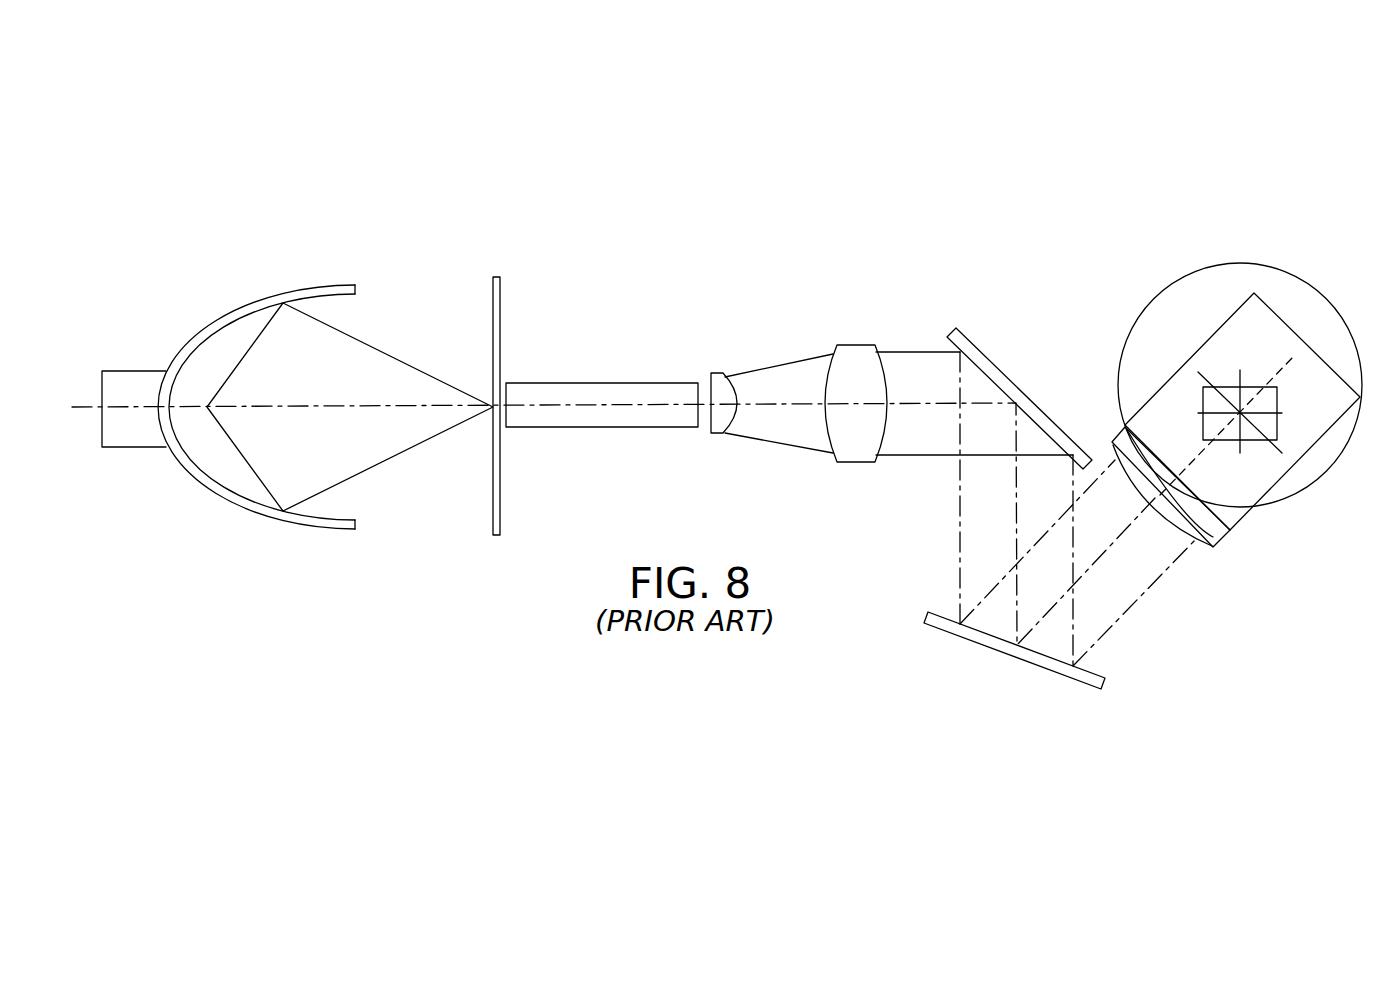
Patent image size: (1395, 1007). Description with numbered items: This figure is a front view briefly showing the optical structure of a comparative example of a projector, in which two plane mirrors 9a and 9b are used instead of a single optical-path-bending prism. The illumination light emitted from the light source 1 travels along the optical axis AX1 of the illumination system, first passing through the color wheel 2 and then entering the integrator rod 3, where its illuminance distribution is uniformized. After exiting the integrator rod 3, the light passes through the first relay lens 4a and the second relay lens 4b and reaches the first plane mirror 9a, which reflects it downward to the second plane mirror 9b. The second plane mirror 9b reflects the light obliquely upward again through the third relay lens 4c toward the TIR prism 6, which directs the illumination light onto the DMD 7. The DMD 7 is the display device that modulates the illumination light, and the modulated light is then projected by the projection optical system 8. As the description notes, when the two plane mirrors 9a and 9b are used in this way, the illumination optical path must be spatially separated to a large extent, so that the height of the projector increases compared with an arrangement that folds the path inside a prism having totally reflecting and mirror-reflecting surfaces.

The light source 1 is at (248, 303).
The color wheel 2 is at (496, 277).
The integrator rod 3 is at (603, 383).
The first relay lens 4a is at (716, 373).
The second relay lens 4b is at (856, 345).
The third relay lens 4c is at (1208, 547).
The TIR prism 6 is at (1242, 522).
The DMD 7 is at (1255, 442).
The projection optical system 8 is at (1168, 287).
The plane mirror 9a is at (997, 358).
The plane mirror 9b is at (972, 647).
The optical axis of the illumination system AX1 is at (755, 407).